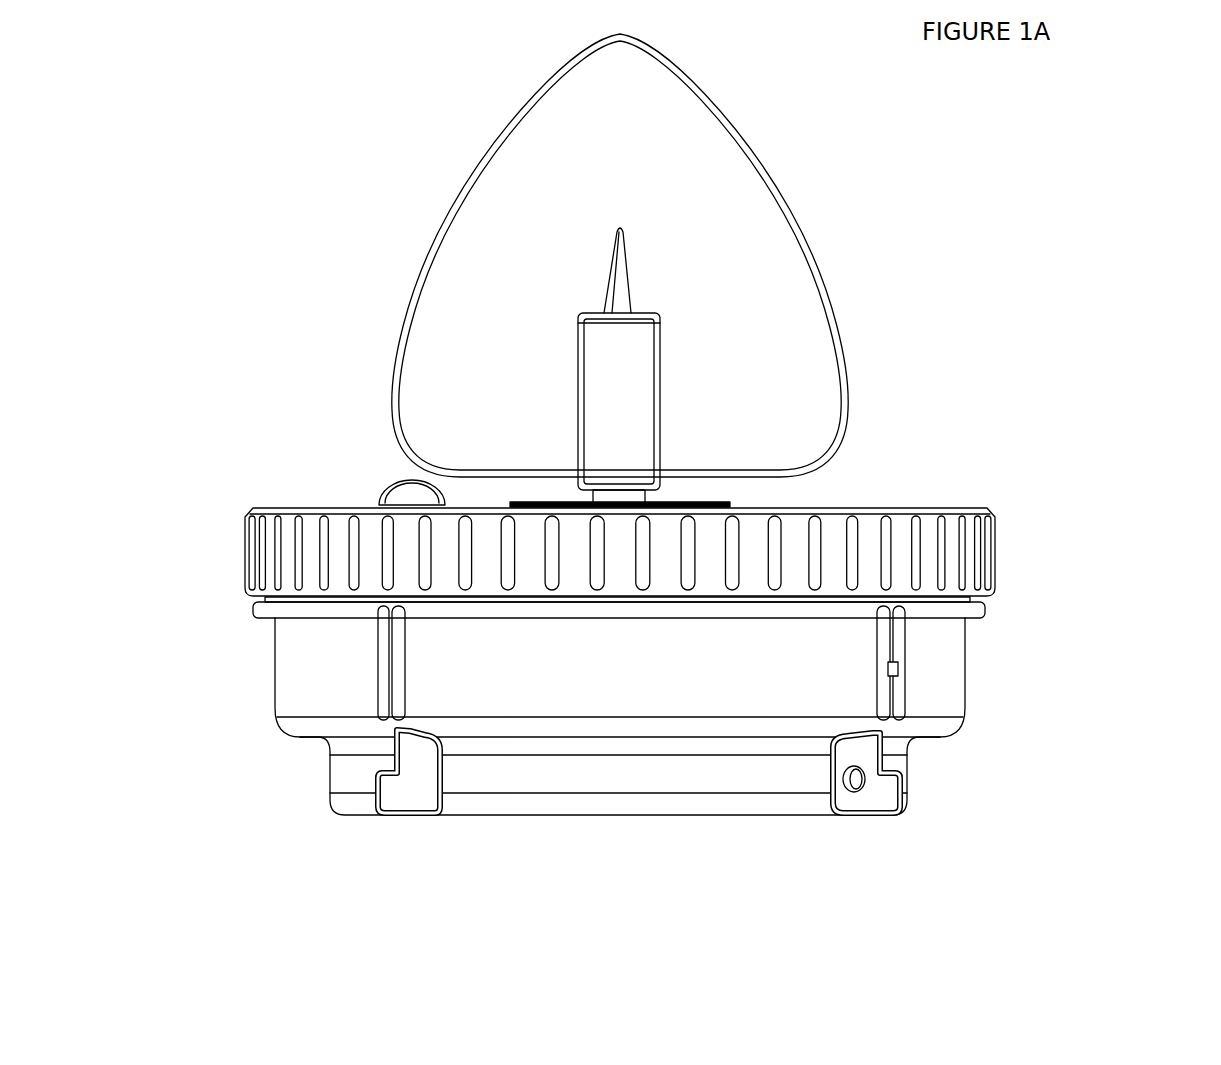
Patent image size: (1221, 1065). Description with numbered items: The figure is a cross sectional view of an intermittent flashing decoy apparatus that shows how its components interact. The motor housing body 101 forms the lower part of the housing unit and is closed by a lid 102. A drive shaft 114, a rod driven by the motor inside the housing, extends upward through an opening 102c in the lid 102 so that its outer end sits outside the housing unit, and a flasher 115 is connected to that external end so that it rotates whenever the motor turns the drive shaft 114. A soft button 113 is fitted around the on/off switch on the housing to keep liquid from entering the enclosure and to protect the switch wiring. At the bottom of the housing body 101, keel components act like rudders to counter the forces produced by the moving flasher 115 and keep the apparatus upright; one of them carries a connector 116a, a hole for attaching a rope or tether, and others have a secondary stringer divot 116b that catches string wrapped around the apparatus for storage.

The motor housing body 101 is at (965, 665).
The lid 102 is at (990, 512).
The opening 102c is at (657, 505).
The soft button 113 is at (383, 491).
The drive shaft 114 is at (593, 500).
The flasher 115 is at (800, 212).
The connector 116a is at (857, 790).
The secondary stringer divot 116b is at (898, 674).